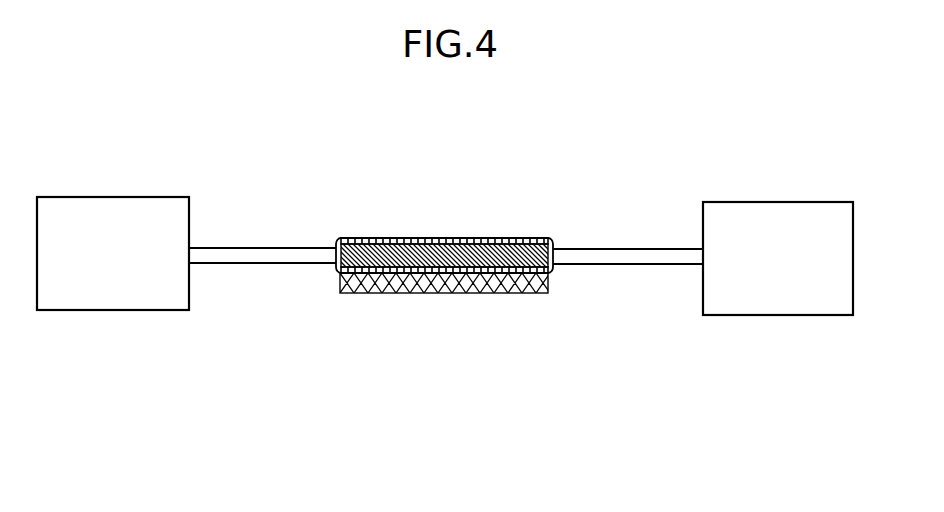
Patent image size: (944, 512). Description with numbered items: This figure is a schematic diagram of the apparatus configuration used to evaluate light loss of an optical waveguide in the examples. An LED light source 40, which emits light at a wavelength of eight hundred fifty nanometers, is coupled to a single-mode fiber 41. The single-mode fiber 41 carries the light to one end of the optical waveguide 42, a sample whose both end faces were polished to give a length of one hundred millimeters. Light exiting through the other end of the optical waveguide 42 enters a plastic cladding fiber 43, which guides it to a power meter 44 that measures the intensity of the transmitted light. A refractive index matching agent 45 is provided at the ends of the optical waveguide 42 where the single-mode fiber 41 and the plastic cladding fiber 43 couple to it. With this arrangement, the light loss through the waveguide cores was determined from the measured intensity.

The LED light source 40 is at (105, 300).
The single-mode fiber 41 is at (263, 258).
The optical waveguide 42 is at (450, 285).
The plastic cladding fiber 43 is at (585, 258).
The power meter 44 is at (775, 303).
The refractive index matching agent 45 is at (336, 272).